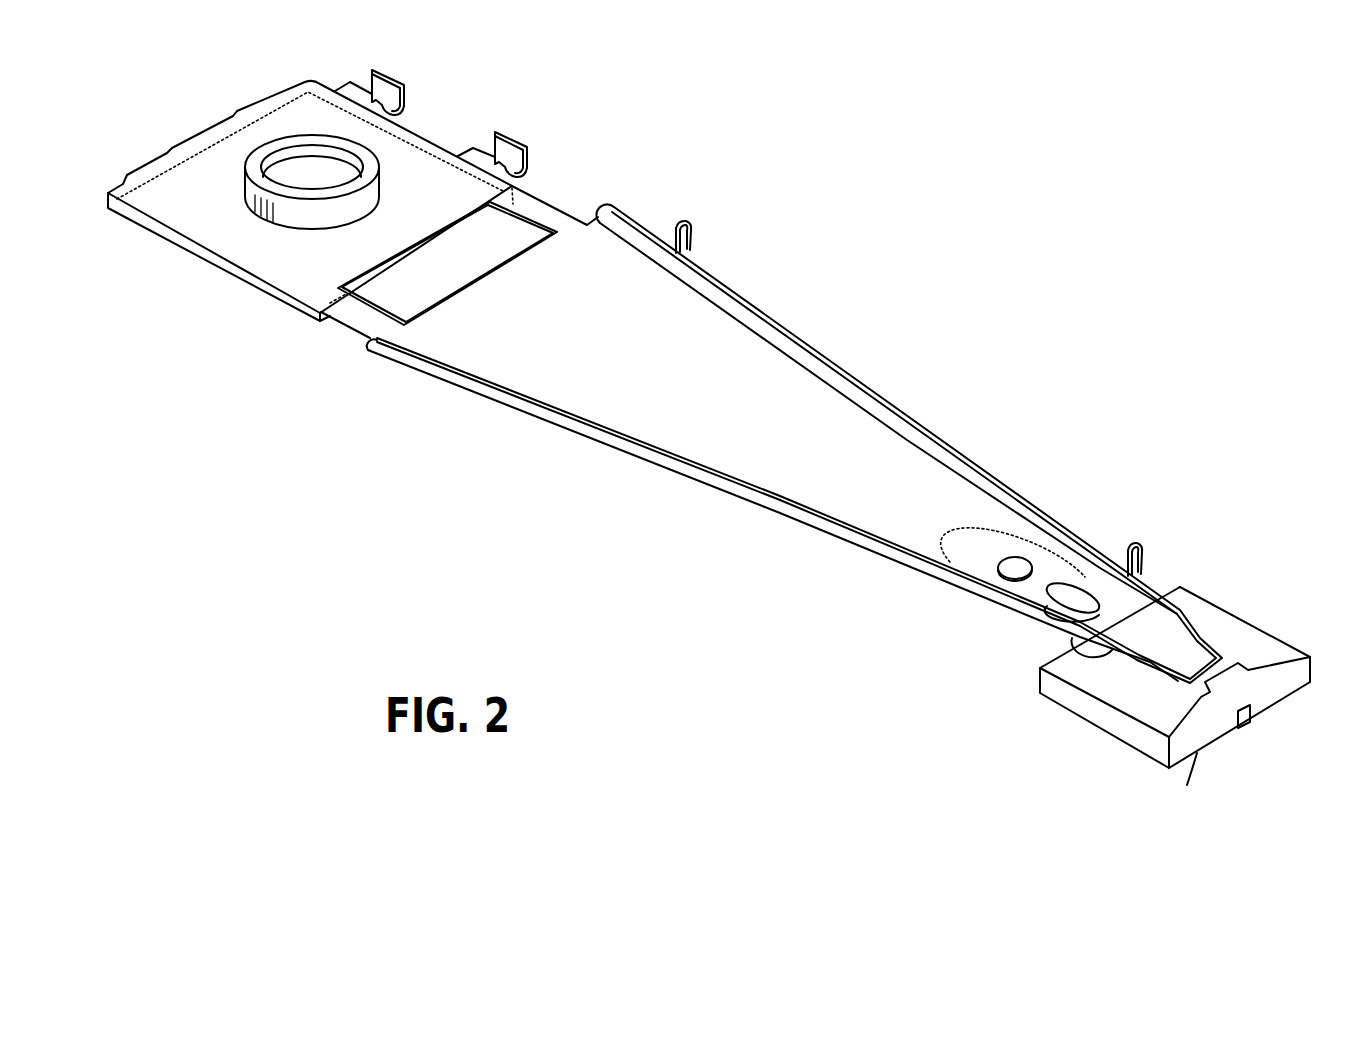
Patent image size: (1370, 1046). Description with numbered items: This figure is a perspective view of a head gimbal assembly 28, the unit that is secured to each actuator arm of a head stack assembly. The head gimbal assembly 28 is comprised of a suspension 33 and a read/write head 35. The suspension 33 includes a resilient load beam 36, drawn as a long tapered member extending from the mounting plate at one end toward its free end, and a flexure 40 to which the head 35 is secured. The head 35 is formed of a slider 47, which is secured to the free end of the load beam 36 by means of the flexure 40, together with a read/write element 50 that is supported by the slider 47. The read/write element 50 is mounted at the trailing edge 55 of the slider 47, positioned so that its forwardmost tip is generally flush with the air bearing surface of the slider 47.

The head gimbal assembly 28 is at (828, 197).
The suspension 33 is at (1017, 470).
The load beam 36 is at (812, 412).
The read/write head 35 is at (1202, 583).
The flexure 40 is at (1077, 645).
The slider 47 is at (1238, 617).
The trailing edge 55 is at (1312, 679).
The read/write element 50 is at (1243, 727).